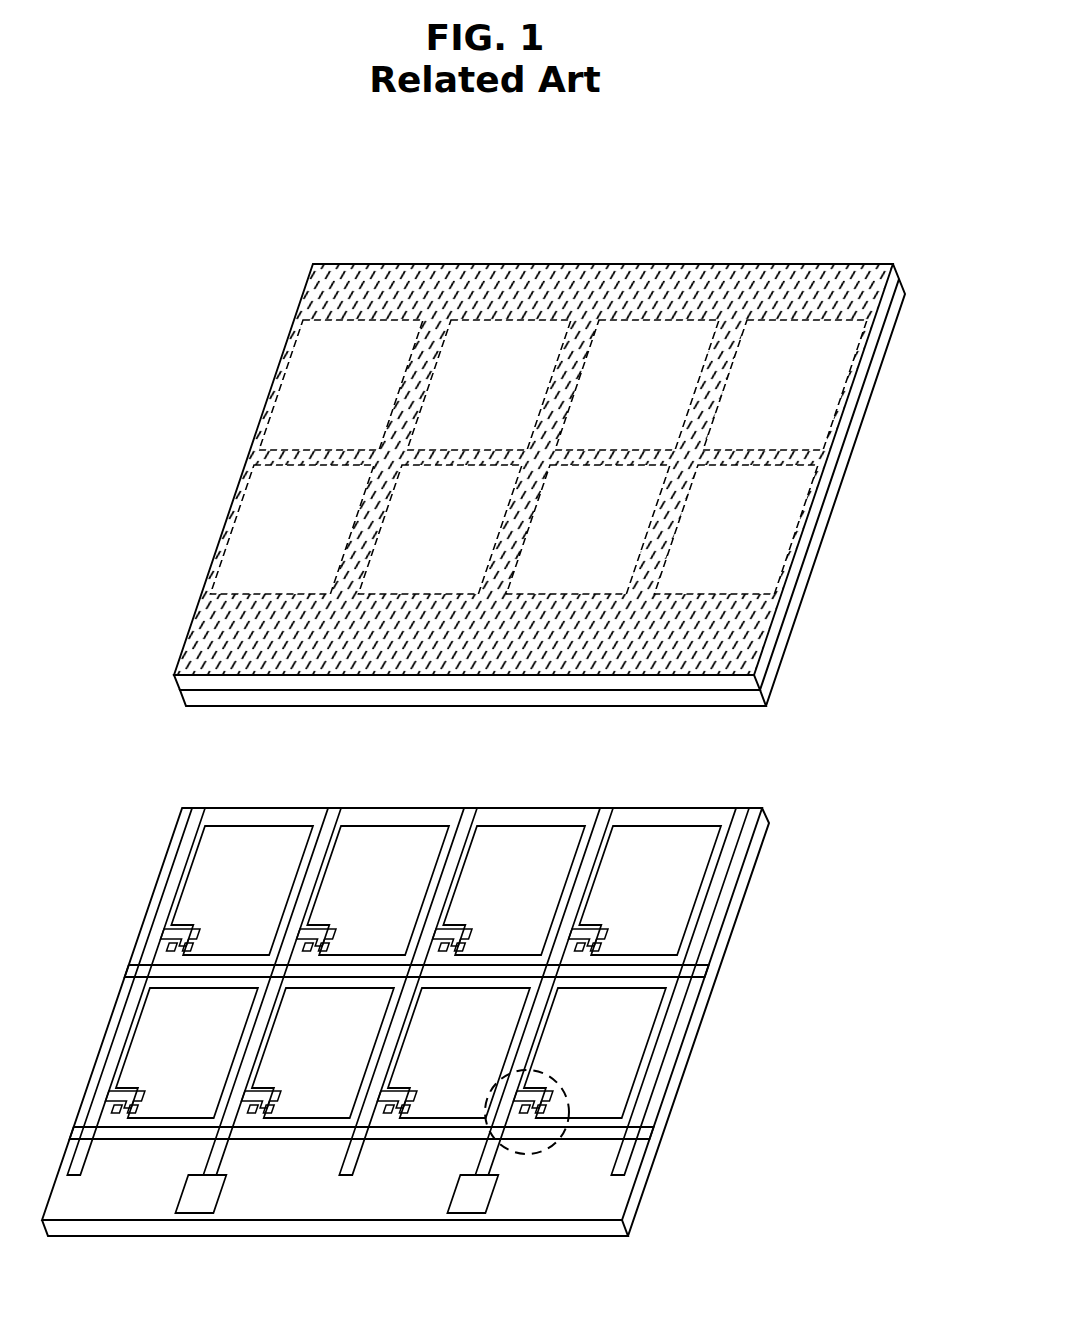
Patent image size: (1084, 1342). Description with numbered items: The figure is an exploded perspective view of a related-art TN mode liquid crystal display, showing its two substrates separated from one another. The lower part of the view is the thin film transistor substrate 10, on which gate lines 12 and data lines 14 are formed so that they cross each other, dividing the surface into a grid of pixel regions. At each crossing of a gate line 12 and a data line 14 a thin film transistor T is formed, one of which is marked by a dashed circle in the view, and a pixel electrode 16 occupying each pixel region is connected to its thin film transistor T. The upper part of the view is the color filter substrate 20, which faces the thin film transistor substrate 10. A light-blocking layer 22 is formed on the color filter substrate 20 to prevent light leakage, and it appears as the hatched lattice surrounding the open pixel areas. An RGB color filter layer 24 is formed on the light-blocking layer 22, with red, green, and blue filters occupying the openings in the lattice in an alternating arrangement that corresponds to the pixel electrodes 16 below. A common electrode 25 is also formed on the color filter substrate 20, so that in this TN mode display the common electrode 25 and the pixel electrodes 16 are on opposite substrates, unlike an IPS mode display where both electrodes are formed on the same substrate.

The thin film transistor substrate 10 is at (621, 1228).
The gate line 12 is at (634, 1138).
The data line 14 is at (478, 1160).
The pixel electrode 16 is at (650, 1066).
The thin film transistor T is at (529, 1155).
The color filter substrate 20 is at (748, 685).
The light-blocking layer 22 is at (820, 457).
The RGB color filter layer 24 is at (583, 358).
The common electrode 25 is at (752, 699).